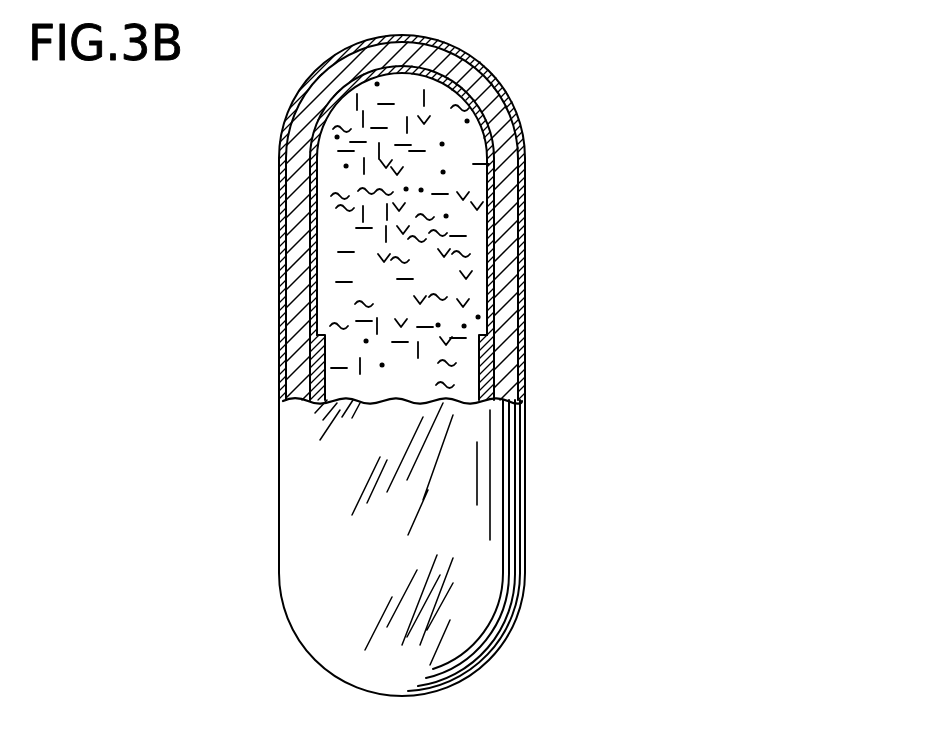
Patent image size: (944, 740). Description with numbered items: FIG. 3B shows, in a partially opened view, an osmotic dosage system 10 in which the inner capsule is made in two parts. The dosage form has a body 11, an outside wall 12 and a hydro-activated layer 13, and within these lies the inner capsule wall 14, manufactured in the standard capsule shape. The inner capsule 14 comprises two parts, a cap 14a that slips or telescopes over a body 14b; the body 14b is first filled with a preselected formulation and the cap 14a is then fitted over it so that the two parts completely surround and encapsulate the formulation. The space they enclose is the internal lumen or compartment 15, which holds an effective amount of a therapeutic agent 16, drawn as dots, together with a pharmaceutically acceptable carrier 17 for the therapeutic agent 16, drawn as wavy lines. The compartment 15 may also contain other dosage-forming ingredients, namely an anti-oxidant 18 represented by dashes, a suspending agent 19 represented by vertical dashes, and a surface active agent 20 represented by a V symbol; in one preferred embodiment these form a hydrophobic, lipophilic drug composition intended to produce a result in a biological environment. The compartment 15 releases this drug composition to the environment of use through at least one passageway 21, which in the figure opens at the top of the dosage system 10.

The osmotic dosage system 10 is at (527, 73).
The body 11 is at (526, 140).
The outside wall 12 is at (519, 180).
The hydro-activated layer 13 is at (506, 218).
The inner capsule wall 14 is at (494, 272).
The cap 14a is at (526, 315).
The body 14b is at (490, 369).
The compartment 15 is at (302, 91).
The therapeutic agent 16 is at (336, 137).
The pharmaceutically acceptable carrier 17 is at (326, 320).
The anti-oxidant 18 is at (338, 211).
The suspending agent 19 is at (339, 244).
The surface active agent 20 is at (344, 296).
The passageway 21 is at (403, 38).